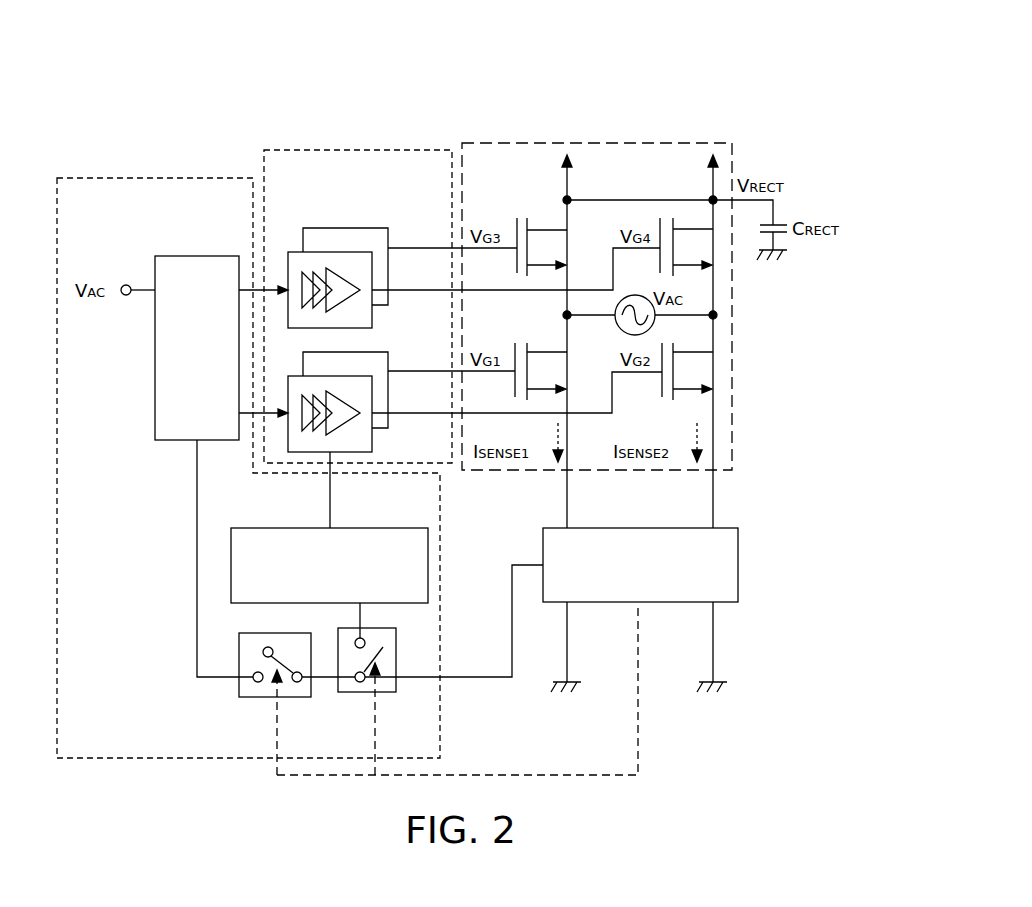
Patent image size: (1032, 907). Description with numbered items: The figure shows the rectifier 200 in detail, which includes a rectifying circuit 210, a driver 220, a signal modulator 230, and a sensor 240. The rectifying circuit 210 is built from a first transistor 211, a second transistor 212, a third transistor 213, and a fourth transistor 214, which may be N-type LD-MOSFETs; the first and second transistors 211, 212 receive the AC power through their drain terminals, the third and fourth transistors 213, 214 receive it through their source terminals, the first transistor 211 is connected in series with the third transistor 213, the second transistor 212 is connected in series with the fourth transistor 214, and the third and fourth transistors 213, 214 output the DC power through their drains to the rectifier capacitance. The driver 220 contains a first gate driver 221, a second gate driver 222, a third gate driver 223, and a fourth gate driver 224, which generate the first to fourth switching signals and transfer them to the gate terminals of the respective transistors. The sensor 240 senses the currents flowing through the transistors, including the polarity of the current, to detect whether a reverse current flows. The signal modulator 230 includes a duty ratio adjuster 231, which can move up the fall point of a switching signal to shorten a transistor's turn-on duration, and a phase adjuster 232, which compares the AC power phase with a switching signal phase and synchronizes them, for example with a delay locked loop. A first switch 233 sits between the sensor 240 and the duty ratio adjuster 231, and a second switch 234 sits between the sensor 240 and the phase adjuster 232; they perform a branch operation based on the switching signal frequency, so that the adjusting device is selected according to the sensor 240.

The rectifier 200 is at (898, 320).
The rectifying circuit 210 is at (598, 143).
The first transistor 211 is at (548, 352).
The second transistor 212 is at (690, 389).
The third transistor 213 is at (543, 230).
The fourth transistor 214 is at (690, 229).
The driver 220 is at (372, 150).
The first gate driver 221 is at (383, 352).
The second gate driver 222 is at (372, 438).
The third gate driver 223 is at (352, 228).
The fourth gate driver 224 is at (301, 252).
The signal modulator 230 is at (156, 178).
The duty ratio adjuster 231 is at (280, 528).
The phase adjuster 232 is at (198, 256).
The first switch 233 is at (352, 692).
The second switch 234 is at (256, 697).
The sensor 240 is at (738, 565).